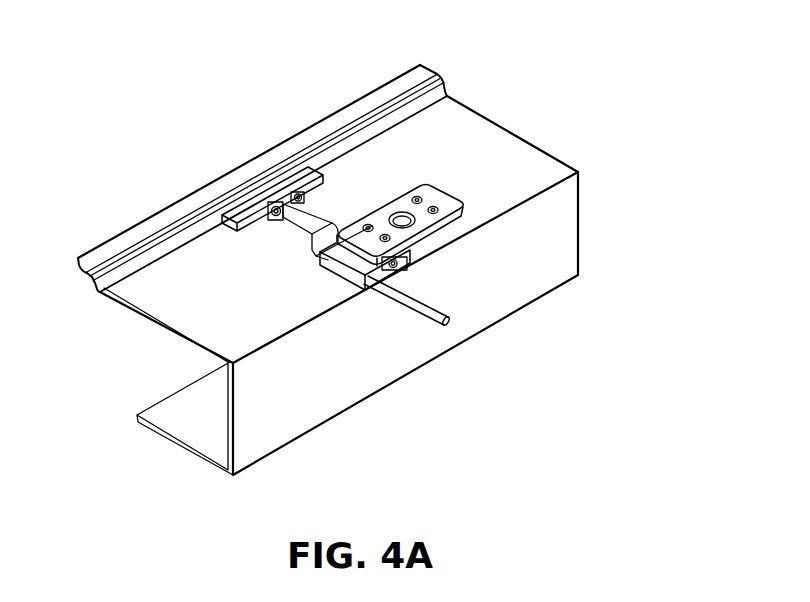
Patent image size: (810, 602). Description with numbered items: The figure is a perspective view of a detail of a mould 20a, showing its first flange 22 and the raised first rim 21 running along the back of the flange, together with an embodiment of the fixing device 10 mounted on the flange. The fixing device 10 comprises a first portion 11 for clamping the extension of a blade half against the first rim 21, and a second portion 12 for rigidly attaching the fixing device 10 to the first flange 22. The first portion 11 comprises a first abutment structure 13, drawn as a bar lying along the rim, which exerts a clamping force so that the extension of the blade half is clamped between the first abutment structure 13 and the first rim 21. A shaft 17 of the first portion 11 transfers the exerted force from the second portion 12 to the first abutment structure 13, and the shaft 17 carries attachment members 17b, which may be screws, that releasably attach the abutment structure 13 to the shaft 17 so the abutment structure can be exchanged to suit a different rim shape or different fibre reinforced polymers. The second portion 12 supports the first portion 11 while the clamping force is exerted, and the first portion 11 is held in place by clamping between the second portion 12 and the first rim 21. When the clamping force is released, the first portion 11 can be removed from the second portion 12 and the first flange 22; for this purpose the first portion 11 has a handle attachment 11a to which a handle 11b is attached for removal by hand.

The fixing device 10 is at (455, 267).
The first portion 11 is at (310, 281).
The handle attachment 11a is at (350, 275).
The handle 11b is at (428, 317).
The second portion 12 is at (435, 193).
The first abutment structure 13 is at (292, 175).
The shaft 17 is at (270, 222).
The attachment members 17b is at (303, 199).
The mould 20a is at (128, 348).
The first rim 21 is at (445, 87).
The first flange 22 is at (240, 311).